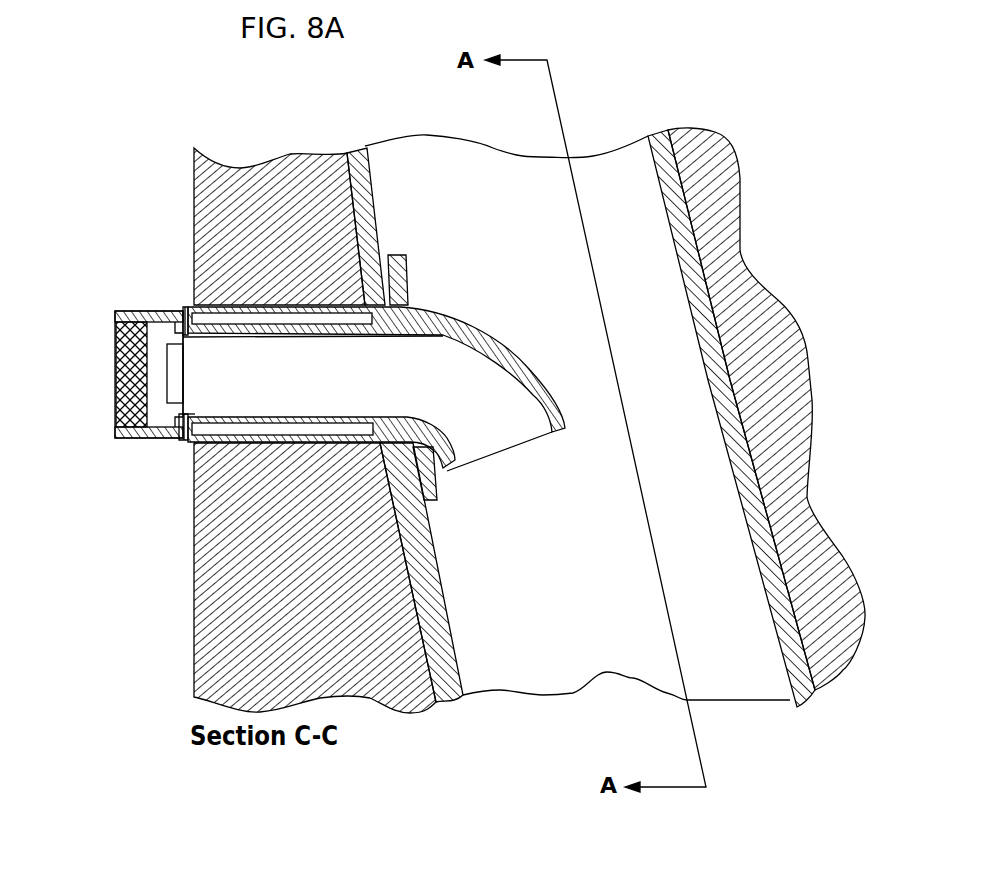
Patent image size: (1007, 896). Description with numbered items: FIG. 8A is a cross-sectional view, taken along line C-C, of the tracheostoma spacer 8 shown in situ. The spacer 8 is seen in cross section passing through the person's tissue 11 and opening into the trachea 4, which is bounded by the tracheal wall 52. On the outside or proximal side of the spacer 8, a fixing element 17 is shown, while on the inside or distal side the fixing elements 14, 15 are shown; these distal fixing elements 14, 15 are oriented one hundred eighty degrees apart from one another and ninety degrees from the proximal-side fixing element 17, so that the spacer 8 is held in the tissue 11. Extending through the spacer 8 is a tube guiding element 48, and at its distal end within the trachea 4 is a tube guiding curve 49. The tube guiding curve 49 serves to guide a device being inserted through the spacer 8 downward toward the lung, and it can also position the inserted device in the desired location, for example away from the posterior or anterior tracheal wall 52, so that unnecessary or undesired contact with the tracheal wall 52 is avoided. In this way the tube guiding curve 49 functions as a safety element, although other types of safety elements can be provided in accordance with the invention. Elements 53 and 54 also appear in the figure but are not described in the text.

The trachea 4 is at (733, 670).
The tracheostoma spacer 8 is at (185, 443).
The tissue 11 is at (194, 572).
The fixing element 14 is at (393, 253).
The fixing element 15 is at (436, 500).
The fixing element 17 is at (175, 402).
The tube guiding element 48 is at (418, 338).
The tube guiding curve 49 is at (504, 333).
The tracheal wall 52 is at (452, 699).
The clip 53 is at (190, 311).
The end cap 54 is at (117, 312).